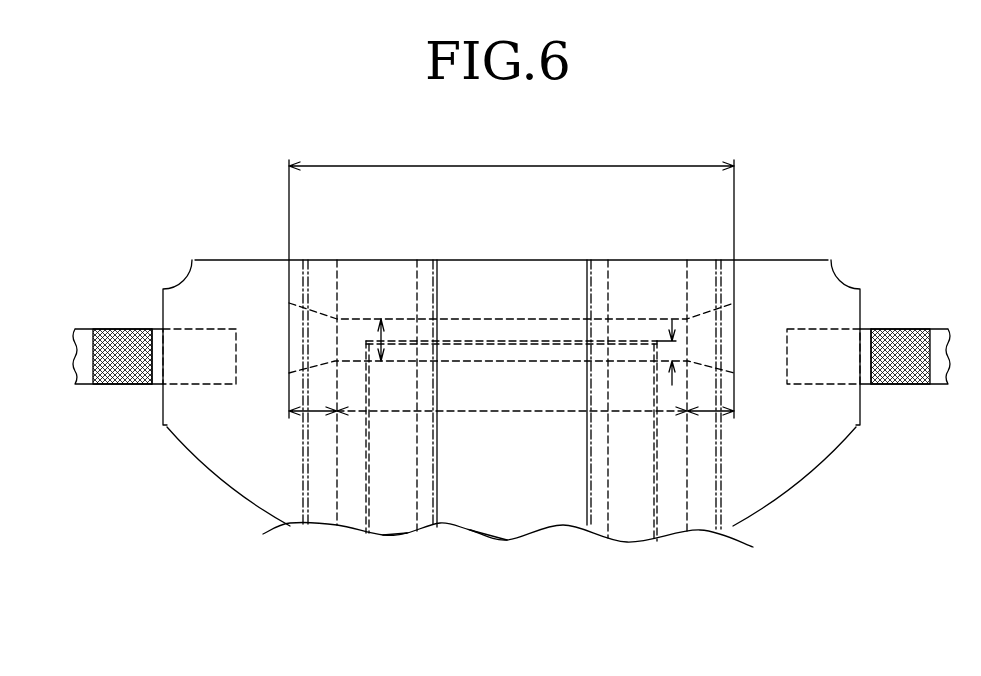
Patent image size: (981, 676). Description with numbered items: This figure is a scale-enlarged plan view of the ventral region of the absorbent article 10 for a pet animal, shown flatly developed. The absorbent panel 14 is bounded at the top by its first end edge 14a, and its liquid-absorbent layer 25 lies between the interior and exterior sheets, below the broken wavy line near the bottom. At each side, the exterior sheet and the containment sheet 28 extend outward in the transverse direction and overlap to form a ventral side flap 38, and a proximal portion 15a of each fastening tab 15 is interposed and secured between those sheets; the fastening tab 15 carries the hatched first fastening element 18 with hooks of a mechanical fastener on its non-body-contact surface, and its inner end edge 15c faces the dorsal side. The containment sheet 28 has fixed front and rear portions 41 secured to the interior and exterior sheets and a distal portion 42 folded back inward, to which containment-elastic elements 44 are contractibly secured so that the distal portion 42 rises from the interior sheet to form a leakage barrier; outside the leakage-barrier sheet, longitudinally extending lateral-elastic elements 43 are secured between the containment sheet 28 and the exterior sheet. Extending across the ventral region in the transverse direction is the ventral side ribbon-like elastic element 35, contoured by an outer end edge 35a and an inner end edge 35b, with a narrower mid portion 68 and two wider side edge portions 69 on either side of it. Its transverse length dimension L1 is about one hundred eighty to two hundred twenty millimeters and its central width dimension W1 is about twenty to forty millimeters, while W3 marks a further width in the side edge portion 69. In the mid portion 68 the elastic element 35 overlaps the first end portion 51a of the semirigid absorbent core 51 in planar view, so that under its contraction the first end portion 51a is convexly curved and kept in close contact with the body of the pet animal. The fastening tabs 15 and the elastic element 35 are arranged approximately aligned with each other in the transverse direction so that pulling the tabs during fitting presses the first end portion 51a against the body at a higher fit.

The absorbent article 10 is at (846, 183).
The absorbent panel 14 is at (745, 523).
The first end edge 14a is at (618, 260).
The fastening tab 15 is at (94, 319).
The proximal portion 15a is at (193, 365).
The inner end edge 15c is at (187, 385).
The first fastening element 18 is at (120, 348).
The liquid-absorbent layer 25 is at (506, 490).
The containment sheet 28 is at (392, 507).
The ventral side ribbon-like elastic element 35 is at (525, 330).
The outer end edge 35a is at (465, 320).
The inner end edge 35b is at (473, 361).
The ventral side flap 38 is at (250, 278).
The front and rear portions 41 is at (702, 278).
The distal portion 42 is at (418, 276).
The lateral-elastic element 43 is at (303, 488).
The containment-elastic element 44 is at (437, 497).
The absorbent core 51 is at (545, 350).
The first end portion 51a is at (497, 290).
The mid portion 68 is at (503, 413).
The side edge portions 69 is at (306, 422).
The length dimension L1 is at (512, 165).
The width dimension W1 is at (380, 320).
The width W3 is at (672, 352).